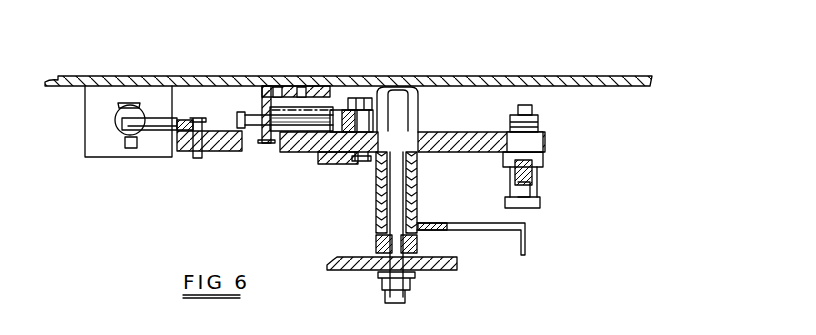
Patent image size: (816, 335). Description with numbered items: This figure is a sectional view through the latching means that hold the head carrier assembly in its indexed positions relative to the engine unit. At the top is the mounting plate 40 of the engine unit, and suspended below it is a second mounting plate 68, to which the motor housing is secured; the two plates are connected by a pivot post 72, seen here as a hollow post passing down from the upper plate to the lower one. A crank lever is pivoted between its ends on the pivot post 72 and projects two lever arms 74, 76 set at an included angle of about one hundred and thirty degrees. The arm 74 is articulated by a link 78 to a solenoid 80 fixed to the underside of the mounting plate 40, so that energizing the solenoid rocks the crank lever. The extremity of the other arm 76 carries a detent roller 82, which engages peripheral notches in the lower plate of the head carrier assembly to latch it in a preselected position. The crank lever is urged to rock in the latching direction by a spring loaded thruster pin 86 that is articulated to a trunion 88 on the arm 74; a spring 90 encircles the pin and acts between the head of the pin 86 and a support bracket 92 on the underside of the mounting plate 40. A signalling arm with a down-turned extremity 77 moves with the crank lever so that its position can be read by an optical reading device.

The mounting plate 40 is at (73, 77).
The mounting plate 68 is at (339, 271).
The pivot post 72 is at (403, 102).
The lever arm 74 is at (235, 151).
The lever arm 76 is at (448, 137).
The down-turned extremity 77 is at (527, 250).
The link 78 is at (160, 128).
The solenoid 80 is at (93, 150).
The detent roller 82 is at (538, 178).
The spring loaded thruster pin 86 is at (253, 112).
The trunion 88 is at (372, 117).
The spring 90 is at (303, 107).
The support bracket 92 is at (270, 87).